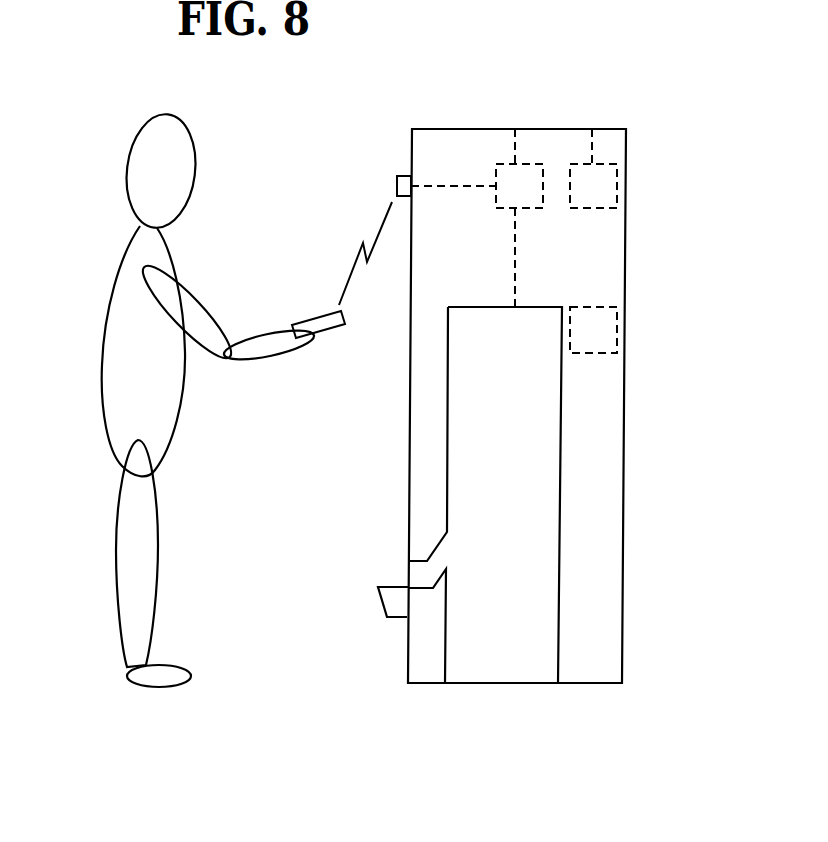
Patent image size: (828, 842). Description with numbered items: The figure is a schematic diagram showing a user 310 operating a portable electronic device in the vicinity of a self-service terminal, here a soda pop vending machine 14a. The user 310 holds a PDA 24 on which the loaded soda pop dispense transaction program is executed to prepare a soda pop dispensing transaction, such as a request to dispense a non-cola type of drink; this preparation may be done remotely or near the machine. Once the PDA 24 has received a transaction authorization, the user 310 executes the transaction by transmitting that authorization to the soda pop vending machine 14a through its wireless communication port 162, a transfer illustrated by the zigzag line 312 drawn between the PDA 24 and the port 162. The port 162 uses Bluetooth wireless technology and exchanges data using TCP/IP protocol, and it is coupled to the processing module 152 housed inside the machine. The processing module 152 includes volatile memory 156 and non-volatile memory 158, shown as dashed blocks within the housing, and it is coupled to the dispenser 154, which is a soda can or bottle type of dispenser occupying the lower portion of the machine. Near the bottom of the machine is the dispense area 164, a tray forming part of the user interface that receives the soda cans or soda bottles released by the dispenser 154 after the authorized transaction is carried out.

The user 310 is at (130, 155).
The PDA 24 is at (305, 316).
The zigzag line 312 is at (380, 228).
The wireless communication port 162 is at (397, 177).
The soda pop vending machine 14a is at (624, 460).
The processing module 152 is at (512, 118).
The volatile memory 156 is at (592, 121).
The non-volatile memory 158 is at (605, 306).
The dispenser 154 is at (547, 587).
The dispense area 164 is at (383, 597).